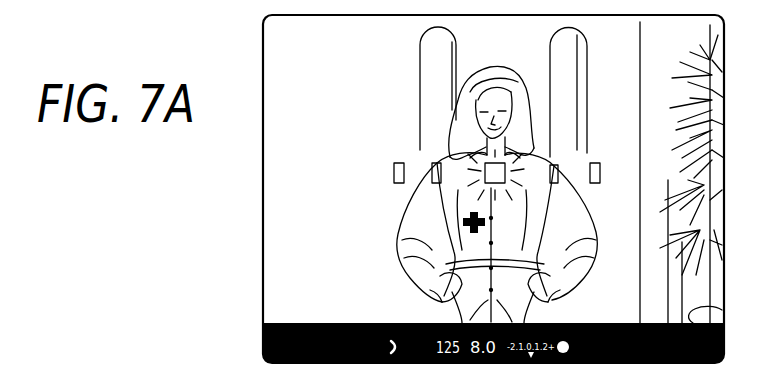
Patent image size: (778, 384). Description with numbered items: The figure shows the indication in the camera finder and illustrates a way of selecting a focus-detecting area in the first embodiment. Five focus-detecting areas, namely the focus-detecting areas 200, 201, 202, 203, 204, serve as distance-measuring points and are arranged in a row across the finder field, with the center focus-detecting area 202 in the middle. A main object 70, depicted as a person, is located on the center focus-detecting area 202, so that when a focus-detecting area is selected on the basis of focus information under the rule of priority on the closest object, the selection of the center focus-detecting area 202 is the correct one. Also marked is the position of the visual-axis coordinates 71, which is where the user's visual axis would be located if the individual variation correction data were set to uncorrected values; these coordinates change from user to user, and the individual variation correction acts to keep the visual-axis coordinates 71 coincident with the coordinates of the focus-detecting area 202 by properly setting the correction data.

The main object 70 is at (505, 72).
The visual-axis coordinates 71 is at (486, 222).
The focus-detecting area 200 is at (397, 162).
The focus-detecting area 201 is at (434, 164).
The center focus-detecting area 202 is at (506, 165).
The focus-detecting area 203 is at (555, 165).
The focus-detecting area 204 is at (597, 163).